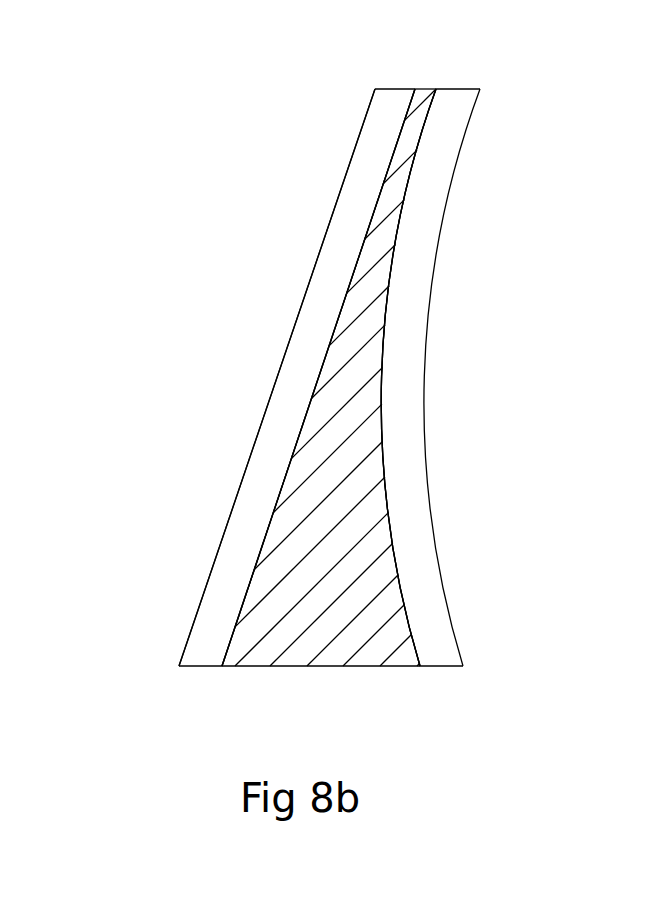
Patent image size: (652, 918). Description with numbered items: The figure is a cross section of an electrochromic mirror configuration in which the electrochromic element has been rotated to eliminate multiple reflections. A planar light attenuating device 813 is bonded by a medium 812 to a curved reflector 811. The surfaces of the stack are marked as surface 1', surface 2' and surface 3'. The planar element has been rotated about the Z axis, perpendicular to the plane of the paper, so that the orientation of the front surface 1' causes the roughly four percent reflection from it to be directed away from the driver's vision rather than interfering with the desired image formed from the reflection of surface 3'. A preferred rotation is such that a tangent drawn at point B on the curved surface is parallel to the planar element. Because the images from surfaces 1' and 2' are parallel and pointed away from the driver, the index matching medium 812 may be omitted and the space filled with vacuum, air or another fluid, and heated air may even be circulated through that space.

The reflector 811 is at (433, 161).
The medium 812 is at (370, 360).
The planar light attenuating device 813 is at (230, 553).
The surface 1' is at (258, 377).
The surface 2' is at (273, 377).
The surface 3' is at (281, 377).
The point B is at (436, 89).